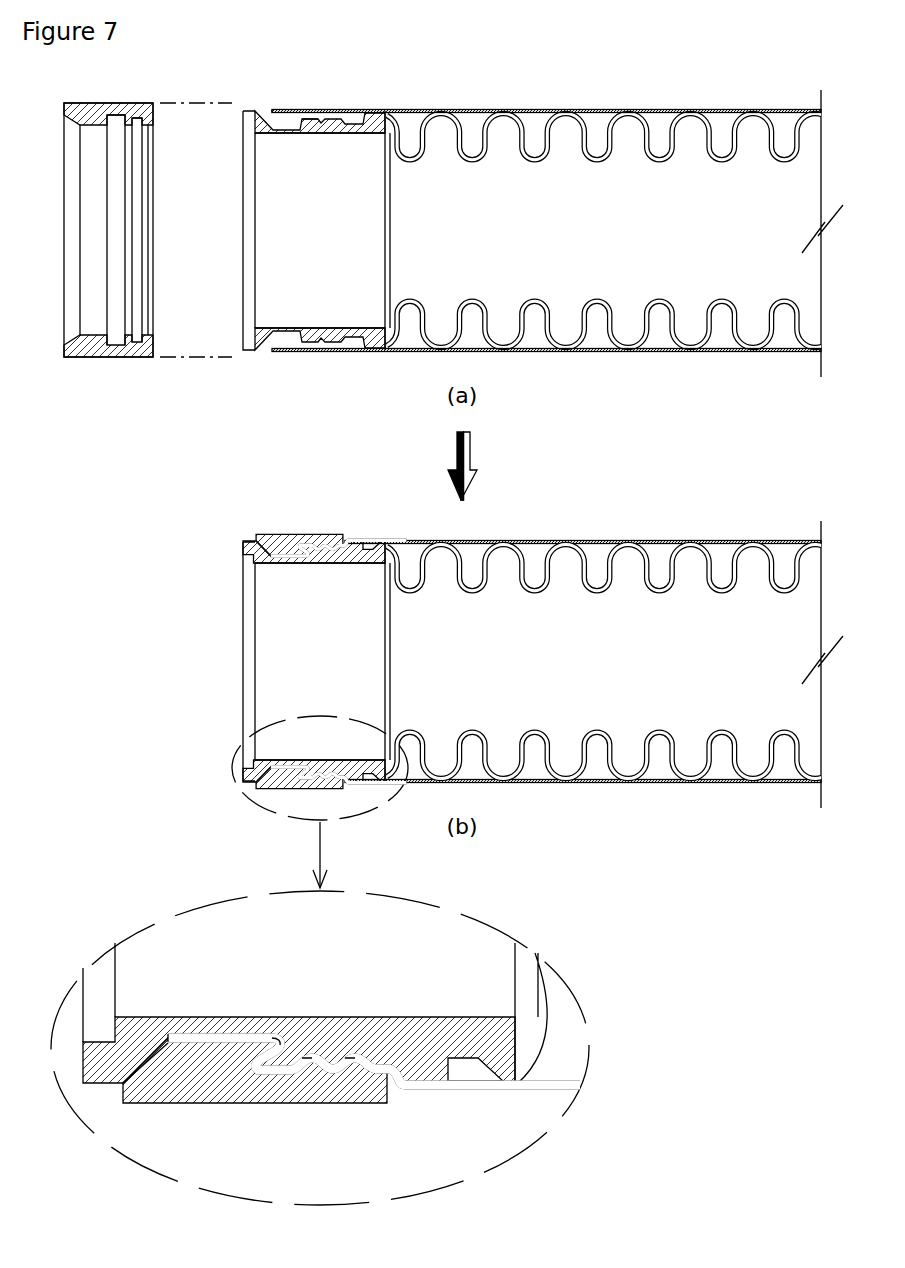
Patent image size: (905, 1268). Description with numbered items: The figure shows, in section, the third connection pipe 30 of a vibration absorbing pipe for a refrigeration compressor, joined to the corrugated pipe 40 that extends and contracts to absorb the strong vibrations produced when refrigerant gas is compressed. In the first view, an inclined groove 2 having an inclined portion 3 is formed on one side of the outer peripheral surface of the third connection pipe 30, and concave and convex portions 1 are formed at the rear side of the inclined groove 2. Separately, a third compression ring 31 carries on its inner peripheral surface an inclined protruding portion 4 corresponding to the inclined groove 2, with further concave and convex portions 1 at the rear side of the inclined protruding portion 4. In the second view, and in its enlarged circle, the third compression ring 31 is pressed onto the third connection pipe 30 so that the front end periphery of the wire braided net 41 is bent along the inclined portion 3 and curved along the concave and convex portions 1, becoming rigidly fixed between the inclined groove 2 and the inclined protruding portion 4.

In FIG. 7a, the concave and convex portions 1 is at (143, 117).
In FIG. 7b, the concave and convex portions 1 is at (333, 1060).
In FIG. 7a, the inclined groove 2 is at (276, 126).
In FIG. 7b, the inclined groove 2 is at (176, 1037).
In FIG. 7a, the inclined portion 3 is at (303, 121).
In FIG. 7b, the inclined portion 3 is at (268, 1043).
In FIG. 7a, the inclined protruding portion 4 is at (99, 126).
In FIG. 7b, the inclined protruding portion 4 is at (205, 1050).
In FIG. 7a, the third connection pipe 30 is at (216, 225).
In FIG. 7b, the third connection pipe 30 is at (216, 634).
In FIG. 7a, the third compression ring 31 is at (99, 103).
In FIG. 7b, the third compression ring 31 is at (300, 543).
In FIG. 7a, the corrugated pipe 40 is at (538, 161).
In FIG. 7b, the corrugated pipe 40 is at (538, 592).
In FIG. 7a, the wire braided net 41 is at (542, 109).
In FIG. 7b, the wire braided net 41 is at (542, 540).